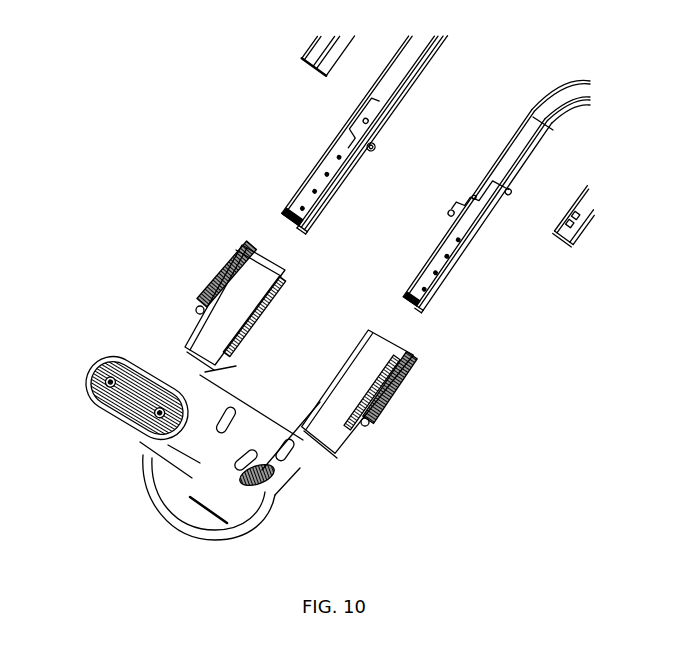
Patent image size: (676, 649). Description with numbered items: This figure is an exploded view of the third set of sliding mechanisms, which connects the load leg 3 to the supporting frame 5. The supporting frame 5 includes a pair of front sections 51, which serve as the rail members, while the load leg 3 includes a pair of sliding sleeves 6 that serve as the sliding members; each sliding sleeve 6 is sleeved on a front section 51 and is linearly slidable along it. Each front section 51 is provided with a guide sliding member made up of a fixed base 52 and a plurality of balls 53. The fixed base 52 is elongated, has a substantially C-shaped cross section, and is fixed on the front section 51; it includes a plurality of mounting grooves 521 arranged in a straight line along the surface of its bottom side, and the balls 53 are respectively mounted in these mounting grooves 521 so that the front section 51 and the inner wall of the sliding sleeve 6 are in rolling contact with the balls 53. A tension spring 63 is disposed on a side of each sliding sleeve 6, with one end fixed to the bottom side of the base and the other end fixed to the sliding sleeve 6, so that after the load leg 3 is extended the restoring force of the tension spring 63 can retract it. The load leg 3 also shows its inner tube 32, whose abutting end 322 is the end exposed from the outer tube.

The load leg 3 is at (180, 446).
The inner tube 32 is at (213, 485).
The abutting end 322 is at (93, 368).
The supporting frame 5 is at (528, 140).
The front section 51 is at (337, 197).
The fixed base 52 is at (343, 148).
The mounting grooves 521 is at (305, 208).
The balls 53 is at (478, 322).
The sliding sleeve 6 is at (203, 342).
The tension spring 63 is at (218, 273).